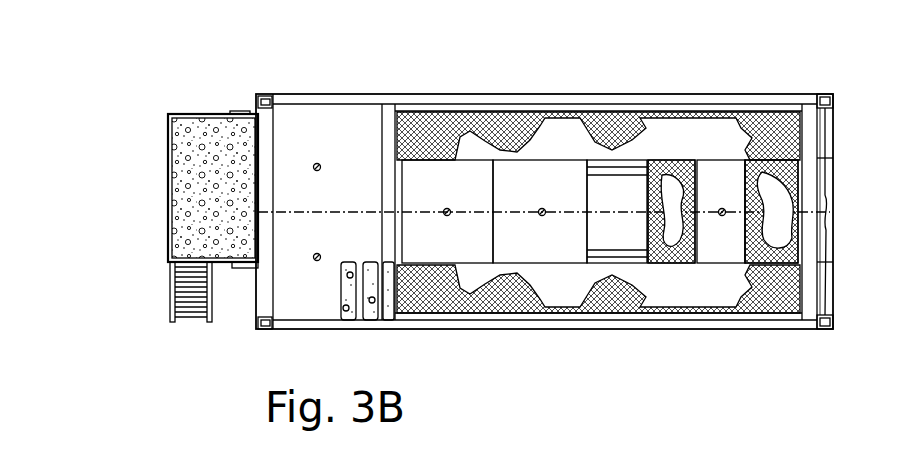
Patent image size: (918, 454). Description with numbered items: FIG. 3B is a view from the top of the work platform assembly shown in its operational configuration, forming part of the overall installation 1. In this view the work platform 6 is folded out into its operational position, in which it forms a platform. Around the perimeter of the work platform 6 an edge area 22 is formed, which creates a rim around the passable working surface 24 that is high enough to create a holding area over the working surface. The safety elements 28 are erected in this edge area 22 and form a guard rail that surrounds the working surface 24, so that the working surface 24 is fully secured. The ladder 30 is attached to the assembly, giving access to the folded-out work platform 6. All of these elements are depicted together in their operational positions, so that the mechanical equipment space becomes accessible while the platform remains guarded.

The filter device 1 is at (508, 76).
The work platform 6 is at (166, 142).
The edge area 22 is at (168, 180).
The working surface 24 is at (192, 136).
The safety elements 28 is at (195, 146).
The ladder 30 is at (168, 300).